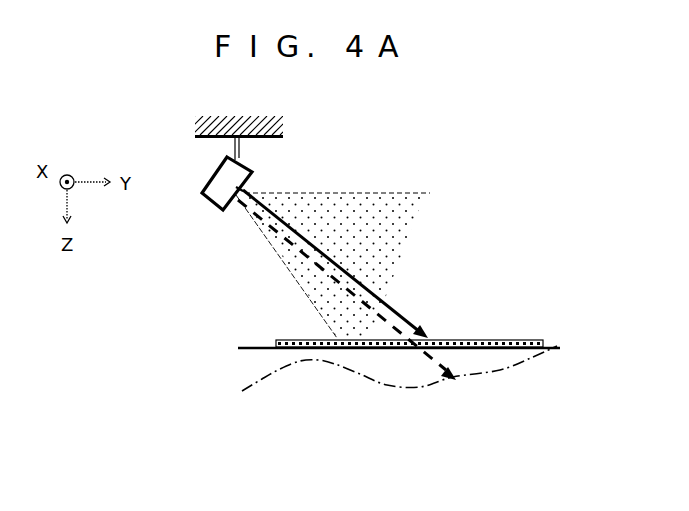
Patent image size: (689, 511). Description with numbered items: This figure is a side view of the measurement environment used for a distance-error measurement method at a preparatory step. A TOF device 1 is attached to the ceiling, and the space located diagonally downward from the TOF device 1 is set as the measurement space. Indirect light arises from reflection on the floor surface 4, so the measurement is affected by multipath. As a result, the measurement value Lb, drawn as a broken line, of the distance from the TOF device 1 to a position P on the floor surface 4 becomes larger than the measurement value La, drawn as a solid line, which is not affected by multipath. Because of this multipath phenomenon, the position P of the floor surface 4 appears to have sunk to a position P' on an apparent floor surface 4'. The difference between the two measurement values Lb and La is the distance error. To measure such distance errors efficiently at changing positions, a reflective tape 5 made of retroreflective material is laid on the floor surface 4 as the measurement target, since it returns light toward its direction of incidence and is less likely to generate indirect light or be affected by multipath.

The TOF device 1 is at (252, 179).
The floor surface 4 is at (373, 361).
The floor surface 4' is at (371, 368).
The reflective tape 5 is at (283, 339).
The measurement value La is at (398, 310).
The measurement value Lb is at (440, 360).
The position P is at (444, 325).
The position P' is at (480, 396).